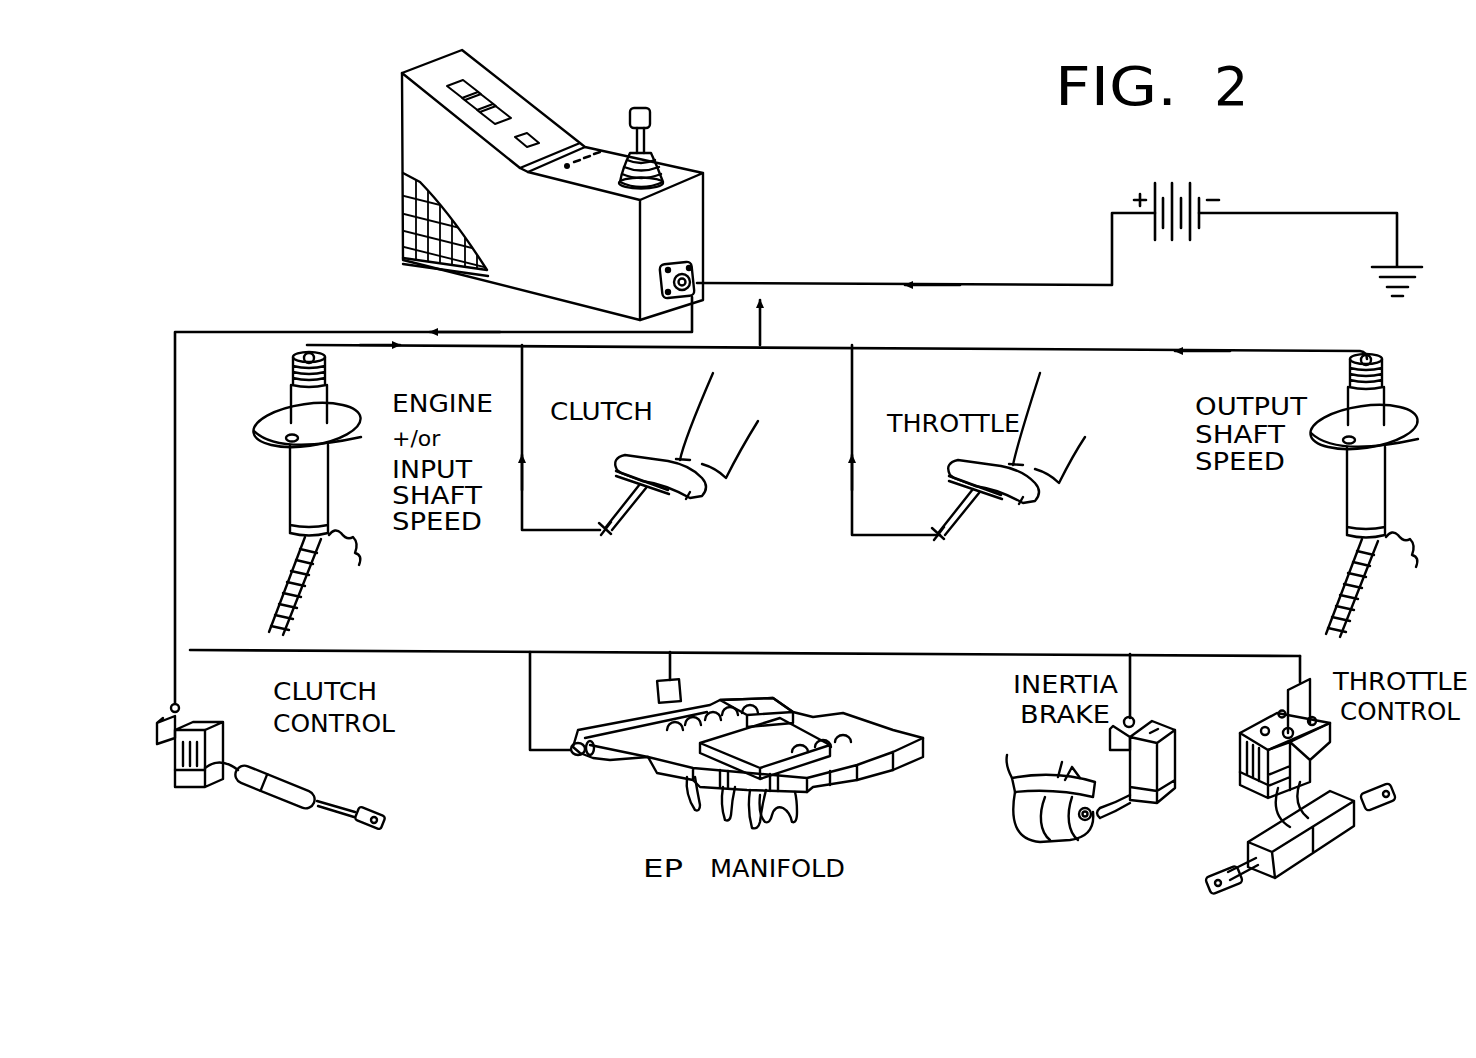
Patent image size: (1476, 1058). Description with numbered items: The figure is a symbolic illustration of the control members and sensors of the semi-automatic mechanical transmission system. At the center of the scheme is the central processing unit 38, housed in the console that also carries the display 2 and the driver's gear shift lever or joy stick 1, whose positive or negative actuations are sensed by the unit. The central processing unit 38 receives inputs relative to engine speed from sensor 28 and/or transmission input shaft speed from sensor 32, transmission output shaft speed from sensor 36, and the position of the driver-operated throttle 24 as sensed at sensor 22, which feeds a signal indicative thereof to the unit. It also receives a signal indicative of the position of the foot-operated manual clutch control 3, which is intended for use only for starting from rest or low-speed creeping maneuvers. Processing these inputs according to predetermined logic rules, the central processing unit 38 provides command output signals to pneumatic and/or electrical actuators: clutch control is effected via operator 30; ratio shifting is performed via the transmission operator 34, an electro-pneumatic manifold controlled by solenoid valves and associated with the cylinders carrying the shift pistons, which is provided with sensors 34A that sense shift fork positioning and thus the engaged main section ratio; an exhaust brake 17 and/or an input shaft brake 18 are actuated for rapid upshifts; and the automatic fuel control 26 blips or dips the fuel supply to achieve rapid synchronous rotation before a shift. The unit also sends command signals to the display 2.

The gear shift lever 1 is at (651, 118).
The display 2 is at (553, 185).
The foot-operated manual clutch control 3 is at (646, 509).
The central processing unit 38 is at (535, 250).
The engine speed sensor 28 is at (276, 493).
The transmission input shaft speed sensor 32 is at (276, 493).
The transmission output shaft speed sensor 36 is at (1318, 538).
The driver-operated throttle 24 is at (1010, 481).
The throttle position sensor 22 is at (983, 527).
The clutch operator 30 is at (324, 766).
The transmission operator 34 is at (876, 708).
The sensors 34A is at (646, 690).
The input shaft brake 18 is at (1130, 754).
The exhaust brake 17 is at (1160, 710).
The automatic fuel control 26 is at (1343, 740).